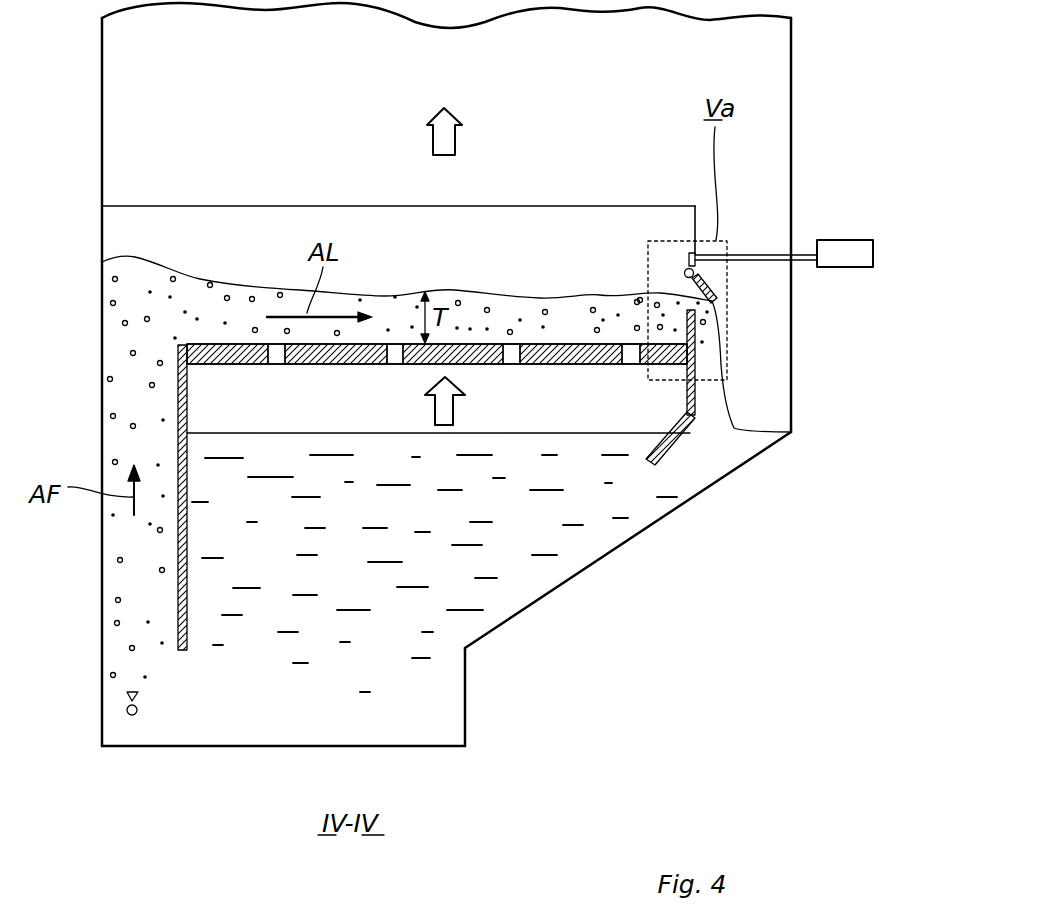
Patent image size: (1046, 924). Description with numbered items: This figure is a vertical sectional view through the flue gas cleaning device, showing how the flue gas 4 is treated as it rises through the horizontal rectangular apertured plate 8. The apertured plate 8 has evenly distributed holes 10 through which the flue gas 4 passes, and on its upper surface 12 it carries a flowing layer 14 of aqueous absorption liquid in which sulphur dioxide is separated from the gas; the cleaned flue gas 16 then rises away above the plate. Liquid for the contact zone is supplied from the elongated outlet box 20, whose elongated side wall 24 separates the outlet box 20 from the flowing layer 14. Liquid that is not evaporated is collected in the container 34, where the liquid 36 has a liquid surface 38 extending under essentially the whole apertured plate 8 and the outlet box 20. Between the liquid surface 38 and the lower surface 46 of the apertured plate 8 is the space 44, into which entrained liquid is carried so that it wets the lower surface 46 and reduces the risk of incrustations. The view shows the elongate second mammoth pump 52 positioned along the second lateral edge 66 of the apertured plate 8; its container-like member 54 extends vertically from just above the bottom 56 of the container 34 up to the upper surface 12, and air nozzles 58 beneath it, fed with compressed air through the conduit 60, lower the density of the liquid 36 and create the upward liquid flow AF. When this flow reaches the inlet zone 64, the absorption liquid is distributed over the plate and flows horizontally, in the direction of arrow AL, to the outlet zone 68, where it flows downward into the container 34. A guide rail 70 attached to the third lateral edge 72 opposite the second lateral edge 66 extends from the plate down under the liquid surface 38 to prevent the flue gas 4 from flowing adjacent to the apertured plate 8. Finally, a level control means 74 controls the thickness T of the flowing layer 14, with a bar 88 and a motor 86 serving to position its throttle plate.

The flue gas 4 is at (432, 410).
The apertured plate 8 is at (330, 365).
The holes 10 is at (283, 357).
The upper surface 12 is at (587, 297).
The flowing layer 14 is at (473, 297).
The cleaned flue gas 16 is at (456, 137).
The outlet box 20 is at (368, 200).
The side wall 24 is at (480, 217).
The container 34 is at (463, 687).
The liquid 36 is at (297, 700).
The liquid surface 38 is at (585, 433).
The space 44 is at (531, 406).
The lower surface 46 is at (235, 363).
The second mammoth pump 52 is at (113, 692).
The container-like member 54 is at (178, 600).
The bottom 56 is at (220, 745).
The air nozzles 58 is at (138, 693).
The conduit 60 is at (138, 710).
The inlet zone 64 is at (112, 345).
The second lateral edge 66 is at (178, 346).
The outlet zone 68 is at (713, 372).
The guide rail 70 is at (697, 395).
The third lateral edge 72 is at (689, 353).
The level control means 74 is at (675, 258).
The motor 86 is at (847, 240).
The bar 88 is at (773, 253).